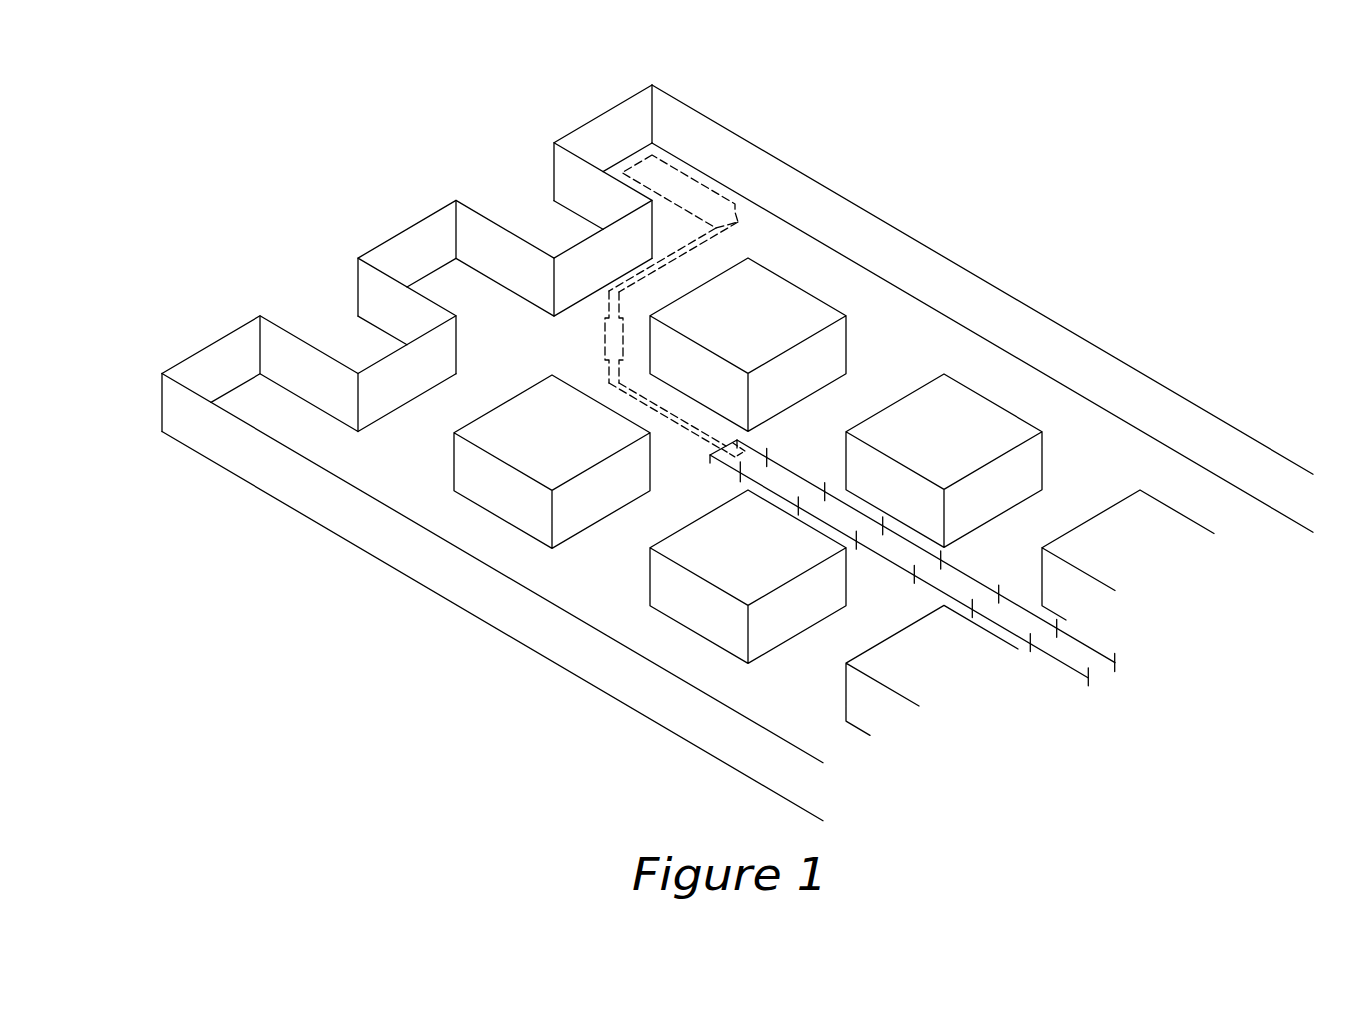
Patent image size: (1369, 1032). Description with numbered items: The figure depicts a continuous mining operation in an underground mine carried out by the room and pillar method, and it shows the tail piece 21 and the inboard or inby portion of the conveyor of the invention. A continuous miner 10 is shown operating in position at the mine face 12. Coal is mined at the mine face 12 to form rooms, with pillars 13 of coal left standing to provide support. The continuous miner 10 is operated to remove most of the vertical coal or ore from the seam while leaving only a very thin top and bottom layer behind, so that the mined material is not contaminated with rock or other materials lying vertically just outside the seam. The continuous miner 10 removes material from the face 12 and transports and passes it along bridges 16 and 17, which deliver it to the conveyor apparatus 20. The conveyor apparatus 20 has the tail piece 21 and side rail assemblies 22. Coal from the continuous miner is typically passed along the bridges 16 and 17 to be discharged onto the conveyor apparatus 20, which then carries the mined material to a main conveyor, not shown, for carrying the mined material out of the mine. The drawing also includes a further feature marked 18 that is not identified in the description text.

The continuous miner 10 is at (680, 185).
The mine face 12 is at (602, 112).
The pillars 13 is at (455, 462).
The bridge 16 is at (727, 233).
The bridge 17 is at (605, 338).
The channel outlet 18 is at (677, 427).
The conveyor apparatus 20 is at (888, 592).
The tail piece 21 is at (758, 443).
The side rail assemblies 22 is at (963, 573).